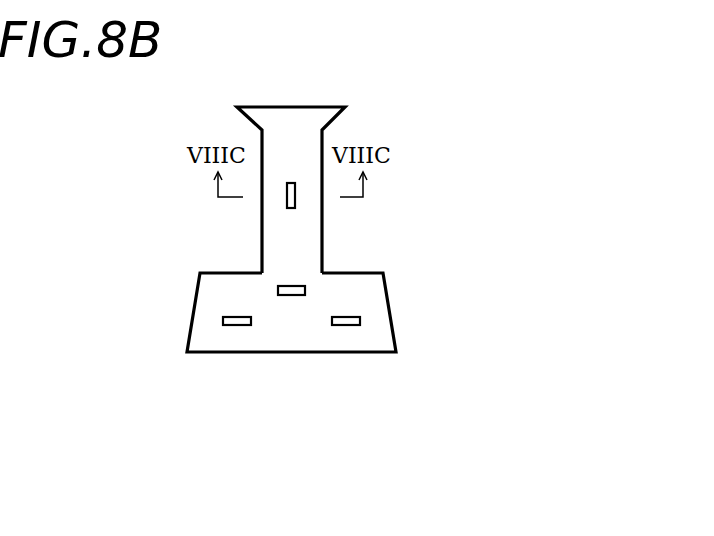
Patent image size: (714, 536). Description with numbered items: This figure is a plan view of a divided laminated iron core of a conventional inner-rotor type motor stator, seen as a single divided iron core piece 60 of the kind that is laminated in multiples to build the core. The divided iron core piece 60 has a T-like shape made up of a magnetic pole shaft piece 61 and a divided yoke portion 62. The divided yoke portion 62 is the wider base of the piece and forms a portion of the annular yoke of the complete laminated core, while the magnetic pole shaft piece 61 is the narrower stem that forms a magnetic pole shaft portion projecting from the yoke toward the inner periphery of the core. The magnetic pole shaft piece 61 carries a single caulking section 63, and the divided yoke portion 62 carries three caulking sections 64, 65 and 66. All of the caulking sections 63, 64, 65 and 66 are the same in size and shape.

The divided iron core piece 60 is at (320, 276).
The magnetic pole shaft piece 61 is at (298, 242).
The divided yoke portion 62 is at (380, 322).
The caulking section 63 is at (287, 200).
The caulking section 64 is at (235, 325).
The caulking section 65 is at (292, 295).
The caulking section 66 is at (346, 325).